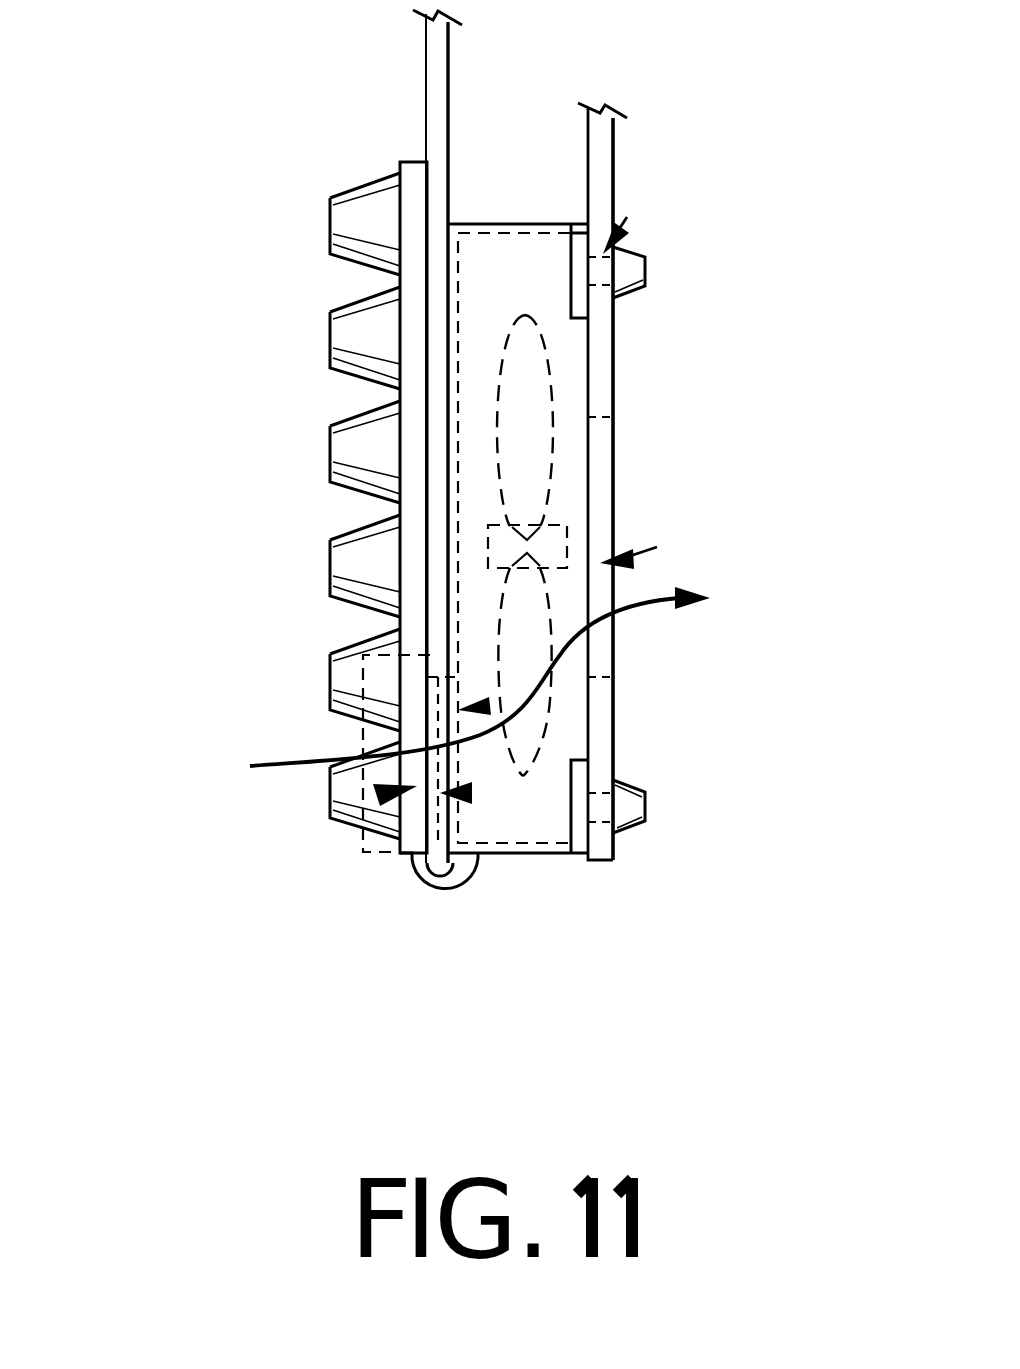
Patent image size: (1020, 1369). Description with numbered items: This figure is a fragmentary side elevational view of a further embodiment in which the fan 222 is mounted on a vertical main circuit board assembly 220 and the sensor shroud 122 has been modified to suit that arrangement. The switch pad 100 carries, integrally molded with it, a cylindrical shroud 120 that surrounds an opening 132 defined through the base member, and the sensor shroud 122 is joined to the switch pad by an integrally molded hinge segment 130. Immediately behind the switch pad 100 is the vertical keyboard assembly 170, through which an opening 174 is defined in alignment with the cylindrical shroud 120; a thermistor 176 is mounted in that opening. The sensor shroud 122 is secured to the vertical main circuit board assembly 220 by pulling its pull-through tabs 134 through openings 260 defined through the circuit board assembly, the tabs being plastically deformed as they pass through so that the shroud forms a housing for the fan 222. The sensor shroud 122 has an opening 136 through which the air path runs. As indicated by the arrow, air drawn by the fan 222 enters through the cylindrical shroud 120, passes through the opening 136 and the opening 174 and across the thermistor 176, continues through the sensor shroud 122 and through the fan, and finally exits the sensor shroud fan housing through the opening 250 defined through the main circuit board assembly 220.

The switch pad 100 is at (415, 511).
The cylindrical shroud 120 is at (363, 735).
The sensor shroud 122 is at (512, 222).
The hinge segment 130 is at (438, 884).
The opening 132 is at (330, 821).
The pull-through tabs 134 is at (637, 272).
The opening 136 is at (490, 705).
The keyboard assembly 170 is at (438, 77).
The opening 174 is at (472, 795).
The thermistor 176 is at (402, 772).
The main circuit board assembly 220 is at (603, 152).
The fan 222 is at (525, 375).
The opening 250 is at (657, 547).
The openings 260 is at (627, 217).